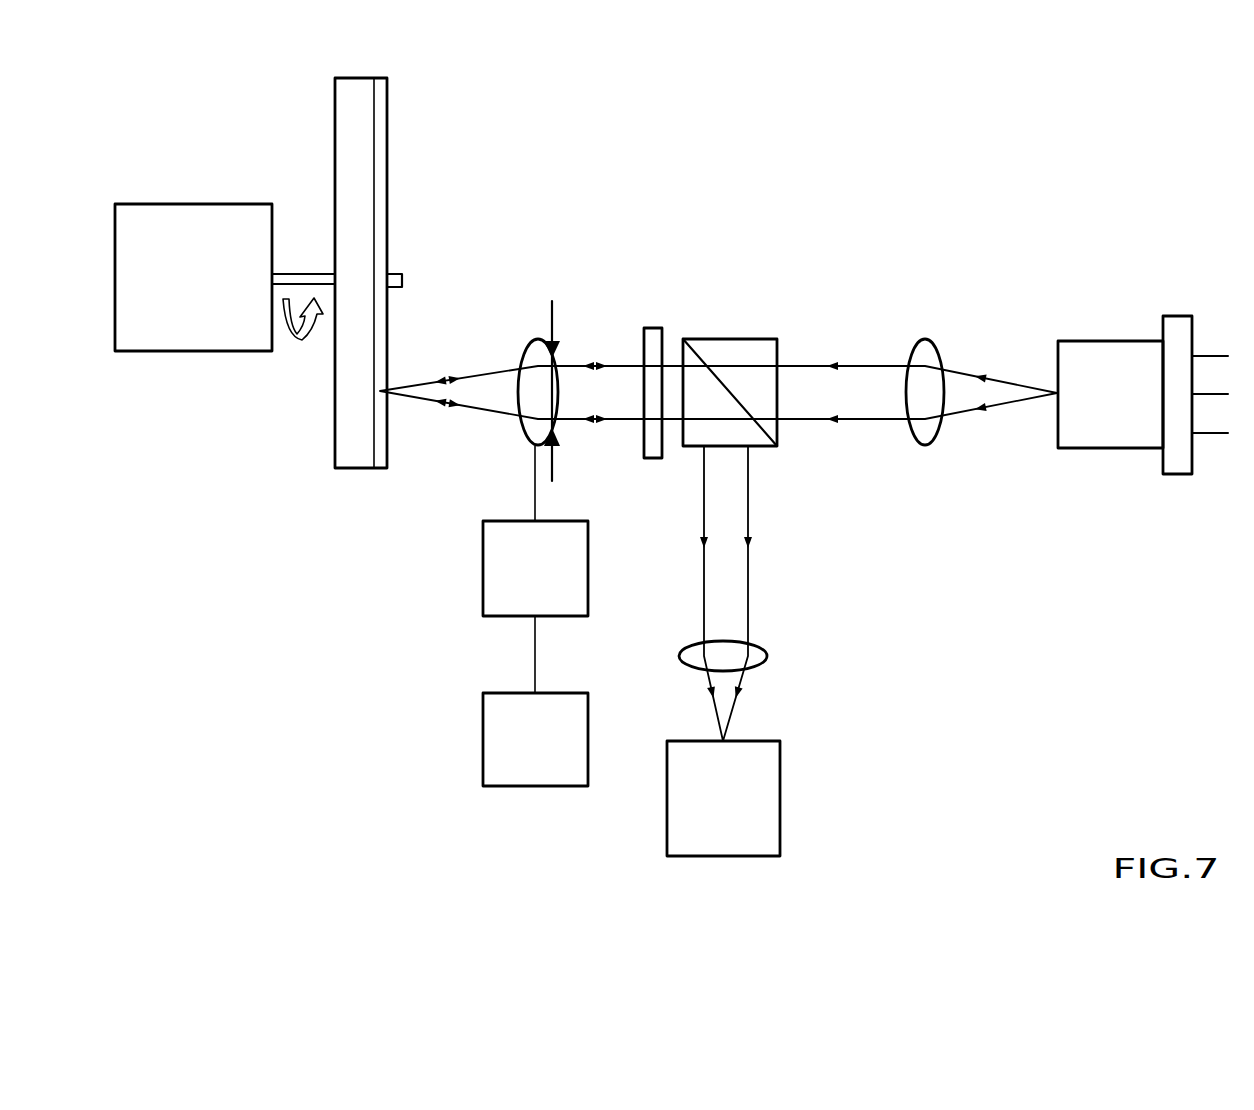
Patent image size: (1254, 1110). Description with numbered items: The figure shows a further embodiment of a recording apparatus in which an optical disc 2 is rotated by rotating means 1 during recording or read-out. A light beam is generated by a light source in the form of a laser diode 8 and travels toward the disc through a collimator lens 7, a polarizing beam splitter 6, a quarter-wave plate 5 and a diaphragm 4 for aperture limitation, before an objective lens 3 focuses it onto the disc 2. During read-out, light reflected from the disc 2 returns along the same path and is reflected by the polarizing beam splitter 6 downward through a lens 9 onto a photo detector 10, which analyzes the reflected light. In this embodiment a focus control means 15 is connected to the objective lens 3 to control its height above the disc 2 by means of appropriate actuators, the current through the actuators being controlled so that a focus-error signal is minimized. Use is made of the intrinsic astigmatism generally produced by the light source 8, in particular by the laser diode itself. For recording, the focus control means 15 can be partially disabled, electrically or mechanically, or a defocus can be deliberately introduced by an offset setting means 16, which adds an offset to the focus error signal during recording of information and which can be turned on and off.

The rotating means 1 is at (190, 203).
The disc 2 is at (388, 140).
The objective lens 3 is at (537, 338).
The diaphragm 4 is at (553, 322).
The quarter-wave plate 5 is at (653, 327).
The polarizing beam splitter 6 is at (730, 338).
The collimator lens 7 is at (925, 338).
The laser diode 8 is at (1117, 340).
The lens 9 is at (768, 655).
The photo detector 10 is at (780, 798).
The focus control means 15 is at (483, 567).
The offset setting means 16 is at (483, 738).